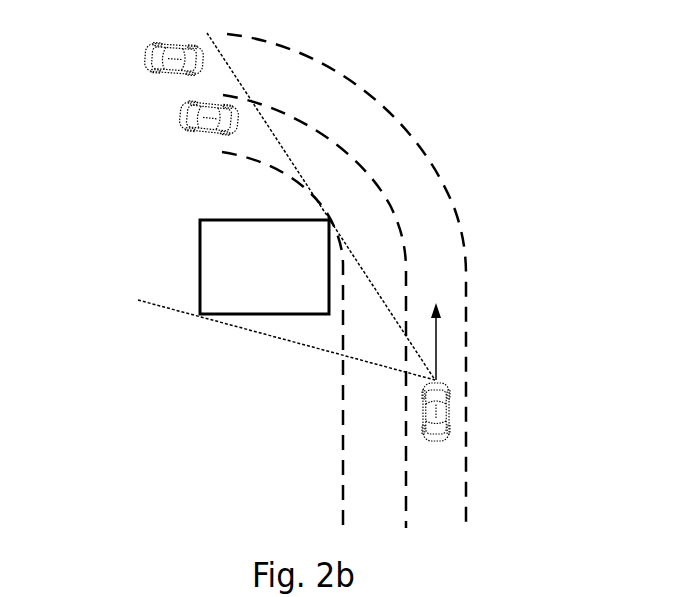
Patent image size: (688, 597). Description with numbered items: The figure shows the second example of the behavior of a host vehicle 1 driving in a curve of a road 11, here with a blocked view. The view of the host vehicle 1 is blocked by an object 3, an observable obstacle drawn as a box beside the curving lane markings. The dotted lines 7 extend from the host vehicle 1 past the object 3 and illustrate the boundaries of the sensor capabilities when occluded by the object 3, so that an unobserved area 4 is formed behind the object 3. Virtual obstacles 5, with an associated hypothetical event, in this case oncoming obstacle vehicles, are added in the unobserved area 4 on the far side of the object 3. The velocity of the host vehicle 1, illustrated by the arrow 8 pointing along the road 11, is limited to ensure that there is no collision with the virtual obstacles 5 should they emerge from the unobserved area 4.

The host vehicle 1 is at (437, 419).
The object 3 is at (272, 283).
The unobserved area 4 is at (160, 208).
The virtual obstacles 5 is at (203, 118).
The dotted lines 7 is at (228, 63).
The arrow 8 is at (437, 348).
The road 11 is at (378, 73).